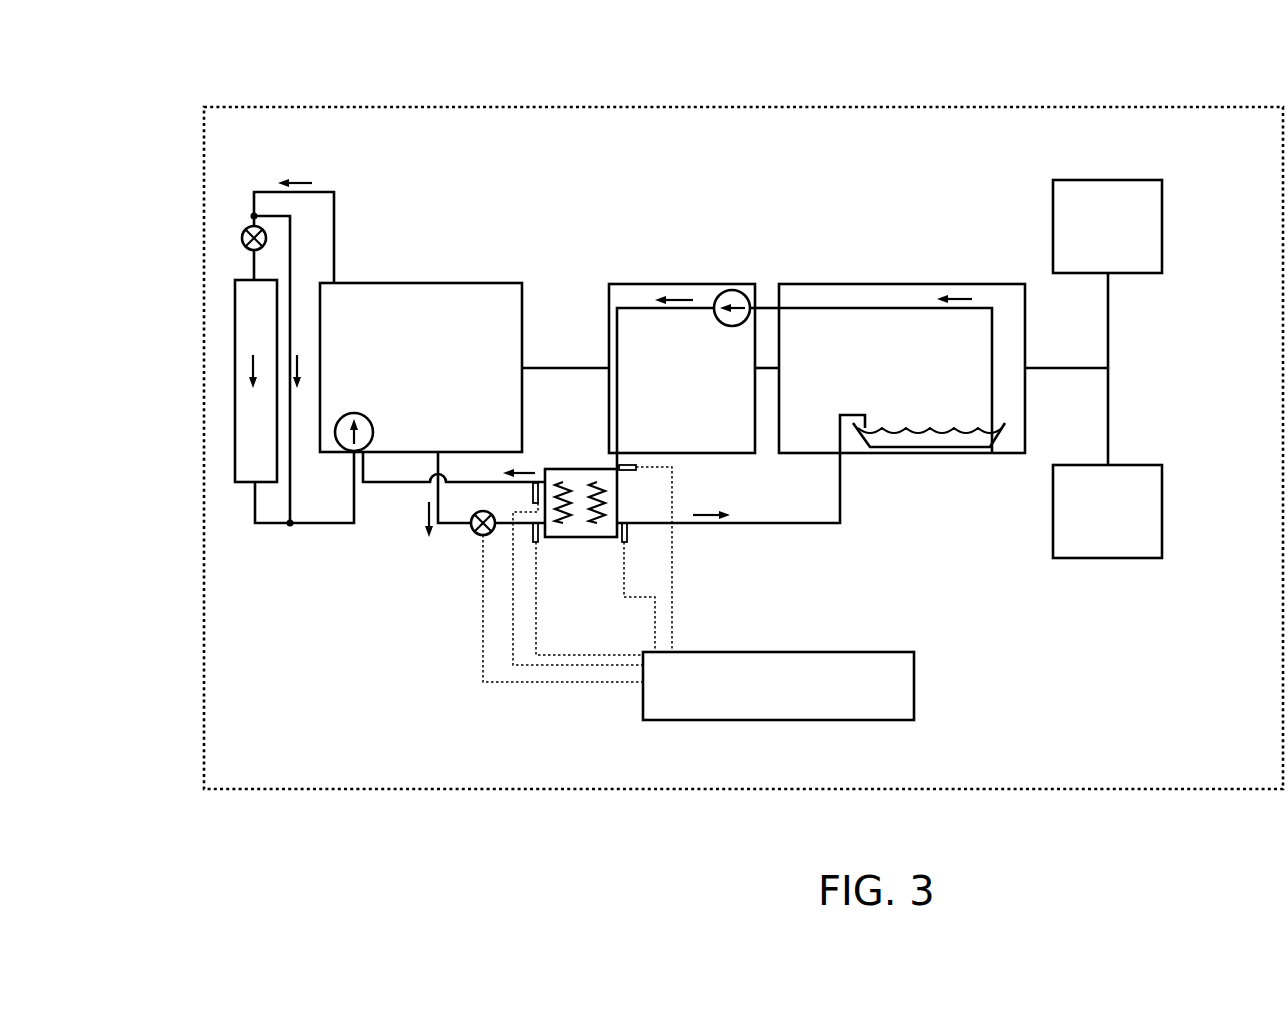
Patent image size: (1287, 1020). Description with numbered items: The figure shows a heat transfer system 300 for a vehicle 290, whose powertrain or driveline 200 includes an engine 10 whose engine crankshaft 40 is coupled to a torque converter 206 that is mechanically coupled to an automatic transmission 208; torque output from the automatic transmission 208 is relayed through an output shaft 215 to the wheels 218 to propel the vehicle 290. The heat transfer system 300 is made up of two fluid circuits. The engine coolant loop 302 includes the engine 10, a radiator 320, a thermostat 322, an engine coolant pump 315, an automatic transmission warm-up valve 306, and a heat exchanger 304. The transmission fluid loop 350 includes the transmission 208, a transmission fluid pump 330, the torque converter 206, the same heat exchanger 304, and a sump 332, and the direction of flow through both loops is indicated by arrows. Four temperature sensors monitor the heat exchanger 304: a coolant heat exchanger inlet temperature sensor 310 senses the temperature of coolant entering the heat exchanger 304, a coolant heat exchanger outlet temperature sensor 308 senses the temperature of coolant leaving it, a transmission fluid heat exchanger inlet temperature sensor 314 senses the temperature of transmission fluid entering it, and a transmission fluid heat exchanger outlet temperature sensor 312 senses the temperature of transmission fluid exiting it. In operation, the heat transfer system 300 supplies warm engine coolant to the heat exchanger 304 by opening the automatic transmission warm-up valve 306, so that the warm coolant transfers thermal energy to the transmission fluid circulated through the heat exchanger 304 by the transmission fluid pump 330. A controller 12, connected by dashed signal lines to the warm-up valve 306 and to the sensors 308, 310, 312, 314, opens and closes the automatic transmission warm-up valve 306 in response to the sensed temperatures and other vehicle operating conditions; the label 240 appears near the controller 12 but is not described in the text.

The heat transfer system 300 is at (196, 73).
The vehicle 290 is at (1220, 790).
The engine coolant loop 302 is at (358, 188).
The thermostat 322 is at (245, 232).
The radiator 320 is at (258, 452).
The engine 10 is at (345, 283).
The engine coolant pump 315 is at (364, 424).
The engine crankshaft 40 is at (528, 370).
The automatic transmission warm-up valve 306 is at (472, 532).
The heat exchanger 304 is at (560, 469).
The coolant heat exchanger outlet temperature sensor 308 is at (533, 492).
The coolant heat exchanger inlet temperature sensor 310 is at (538, 541).
The transmission fluid heat exchanger outlet temperature sensor 312 is at (628, 540).
The transmission fluid heat exchanger inlet temperature sensor 314 is at (621, 470).
The transmission fluid loop 350 is at (676, 209).
The torque converter 206 is at (634, 297).
The transmission fluid pump 330 is at (735, 290).
The automatic transmission 208 is at (940, 284).
The sump 332 is at (930, 447).
The output shaft 215 is at (1052, 367).
The wheels 218 is at (1056, 182).
The driveline 200 is at (1194, 217).
The controller 12 is at (775, 720).
The vehicle 240 is at (909, 751).